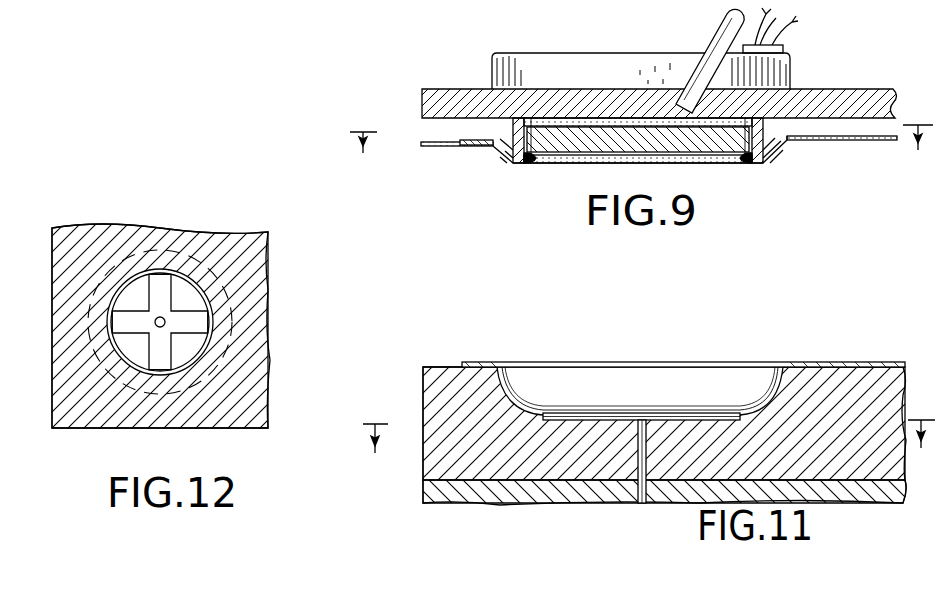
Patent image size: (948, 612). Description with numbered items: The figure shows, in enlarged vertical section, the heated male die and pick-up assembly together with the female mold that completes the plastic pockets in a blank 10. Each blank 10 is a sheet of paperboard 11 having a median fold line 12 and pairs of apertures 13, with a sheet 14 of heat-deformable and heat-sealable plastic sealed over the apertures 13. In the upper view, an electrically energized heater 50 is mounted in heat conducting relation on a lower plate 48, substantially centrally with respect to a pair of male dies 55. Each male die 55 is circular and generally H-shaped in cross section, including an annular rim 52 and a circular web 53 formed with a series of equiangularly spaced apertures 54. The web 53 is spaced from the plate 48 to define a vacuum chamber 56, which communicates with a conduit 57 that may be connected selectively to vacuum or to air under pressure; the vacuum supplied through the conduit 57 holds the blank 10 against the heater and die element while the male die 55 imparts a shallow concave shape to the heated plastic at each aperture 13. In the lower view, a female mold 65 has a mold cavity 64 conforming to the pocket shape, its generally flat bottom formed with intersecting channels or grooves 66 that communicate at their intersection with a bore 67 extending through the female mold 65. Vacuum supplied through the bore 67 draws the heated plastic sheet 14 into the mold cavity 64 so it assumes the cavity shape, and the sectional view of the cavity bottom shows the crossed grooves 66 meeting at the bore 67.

In FIG. 9, the blank 10 is at (456, 153).
In FIG. 11, the blank 10 is at (458, 358).
In FIG. 9, the sheet of paperboard 11 is at (866, 141).
In FIG. 11, the sheet of paperboard 11 is at (870, 365).
In FIG. 11, the median fold line 12 is at (649, 458).
In FIG. 9, the apertures 13 is at (789, 142).
In FIG. 11, the apertures 13 is at (505, 385).
In FIG. 9, the sheet of heat-deformable and heat-sealable plastic 14 is at (482, 136).
In FIG. 11, the sheet of heat-deformable and heat-sealable plastic 14 is at (787, 367).
In FIG. 9, the lower plate 48 is at (870, 100).
In FIG. 9, the electrically energized heater 50 is at (618, 36).
In FIG. 9, the annular rim 52 is at (766, 160).
In FIG. 9, the circular web 53 is at (706, 152).
In FIG. 9, the apertures 54 is at (527, 162).
In FIG. 9, the male die 55 is at (604, 161).
In FIG. 9, the vacuum chamber 56 is at (528, 121).
In FIG. 9, the conduit 57 is at (718, 36).
In FIG. 11, the mold cavity 64 is at (515, 408).
In FIG. 12, the mold cavity 64 is at (183, 292).
In FIG. 11, the female mold 65 is at (833, 398).
In FIG. 12, the female mold 65 is at (122, 210).
In FIG. 11, the intersecting channels or grooves 66 is at (612, 418).
In FIG. 12, the intersecting channels or grooves 66 is at (157, 287).
In FIG. 11, the bore 67 is at (642, 535).